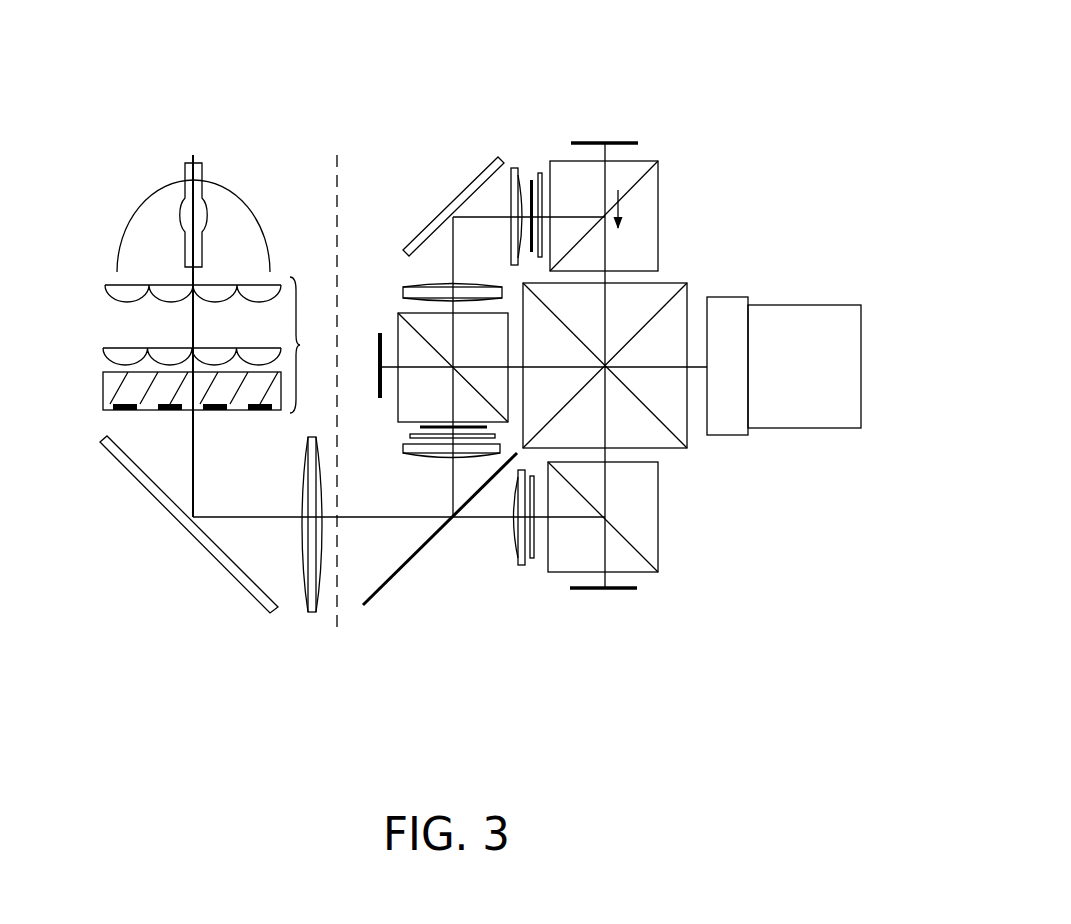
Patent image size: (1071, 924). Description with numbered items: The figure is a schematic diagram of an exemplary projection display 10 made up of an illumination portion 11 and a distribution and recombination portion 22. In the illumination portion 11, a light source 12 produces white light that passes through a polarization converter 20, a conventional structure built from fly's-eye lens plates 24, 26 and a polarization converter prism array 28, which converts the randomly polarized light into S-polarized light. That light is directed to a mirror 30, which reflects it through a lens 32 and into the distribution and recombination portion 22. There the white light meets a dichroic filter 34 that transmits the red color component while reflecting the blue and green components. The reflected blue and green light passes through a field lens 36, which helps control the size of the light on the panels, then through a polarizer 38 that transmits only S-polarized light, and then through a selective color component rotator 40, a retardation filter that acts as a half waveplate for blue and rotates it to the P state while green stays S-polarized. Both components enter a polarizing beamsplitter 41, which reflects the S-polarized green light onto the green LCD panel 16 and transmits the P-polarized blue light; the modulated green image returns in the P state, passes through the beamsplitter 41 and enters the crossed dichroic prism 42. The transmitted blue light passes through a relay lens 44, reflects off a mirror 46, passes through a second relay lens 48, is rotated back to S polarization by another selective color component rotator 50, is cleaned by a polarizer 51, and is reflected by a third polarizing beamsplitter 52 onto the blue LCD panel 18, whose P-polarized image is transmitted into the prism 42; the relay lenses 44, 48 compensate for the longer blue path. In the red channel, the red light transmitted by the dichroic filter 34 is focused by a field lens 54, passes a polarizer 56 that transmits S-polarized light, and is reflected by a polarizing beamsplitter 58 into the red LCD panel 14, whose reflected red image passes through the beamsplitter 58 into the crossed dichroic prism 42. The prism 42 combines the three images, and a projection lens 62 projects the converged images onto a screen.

The projection display 10 is at (290, 62).
The illumination portion 11 is at (90, 500).
The light source 12 is at (163, 202).
The red LCD panel 14 is at (633, 590).
The green LCD panel 16 is at (398, 313).
The blue LCD panel 18 is at (638, 143).
The polarization converter 20 is at (302, 345).
The distribution and recombination portion 22 is at (705, 612).
The fly's-eye lens plate 24 is at (105, 285).
The fly's-eye lens plate 26 is at (103, 350).
The polarization converter prism array 28 is at (106, 388).
The mirror 30 is at (242, 586).
The lens 32 is at (313, 612).
The dichroic filter 34 is at (380, 593).
The field lens 36 is at (403, 447).
The polarizer 38 is at (410, 436).
The selective color component rotator 40 is at (420, 427).
The polarizing beamsplitter 41 is at (380, 335).
The crossed dichroic prism 42 is at (680, 450).
The relay lens 44 is at (403, 290).
The mirror 46 is at (477, 183).
The second relay lens 48 is at (512, 170).
The selective color component rotator 50 is at (530, 180).
The polarizer 51 is at (538, 173).
The polarizing beamsplitter 52 is at (658, 190).
The field lens 54 is at (521, 565).
The polarizer 56 is at (532, 560).
The polarizing beamsplitter 58 is at (658, 572).
The projection lens 62 is at (728, 437).